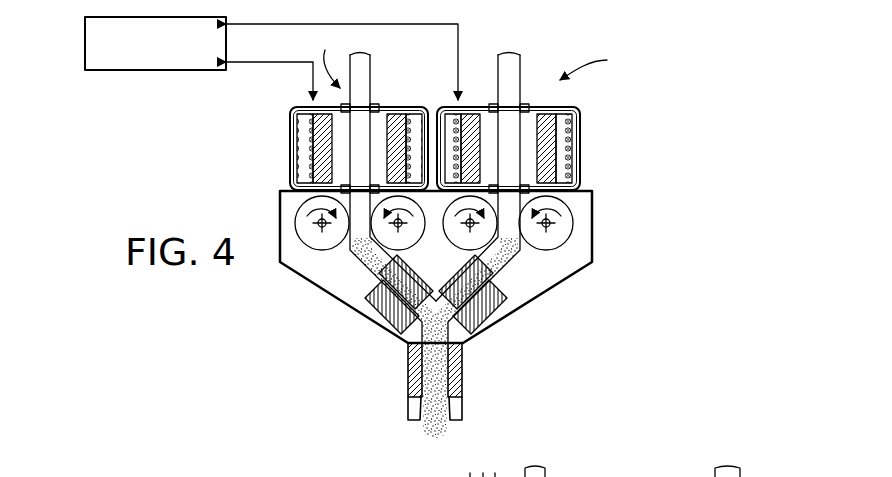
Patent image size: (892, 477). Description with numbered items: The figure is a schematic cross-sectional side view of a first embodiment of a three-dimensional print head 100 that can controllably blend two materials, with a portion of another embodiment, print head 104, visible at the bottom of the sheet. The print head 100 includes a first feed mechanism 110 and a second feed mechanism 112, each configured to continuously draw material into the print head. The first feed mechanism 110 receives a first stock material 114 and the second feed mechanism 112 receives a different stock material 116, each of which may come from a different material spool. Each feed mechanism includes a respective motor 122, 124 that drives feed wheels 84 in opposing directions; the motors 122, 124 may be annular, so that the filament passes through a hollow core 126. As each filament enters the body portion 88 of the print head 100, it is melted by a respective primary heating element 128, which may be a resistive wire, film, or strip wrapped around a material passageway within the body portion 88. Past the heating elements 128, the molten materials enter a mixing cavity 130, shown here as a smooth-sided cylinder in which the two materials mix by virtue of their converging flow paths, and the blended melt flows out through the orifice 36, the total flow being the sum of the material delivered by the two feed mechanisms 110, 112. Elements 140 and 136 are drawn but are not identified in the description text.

The print head 100 is at (668, 30).
The first feed mechanism 110 is at (327, 59).
The second feed mechanism 112 is at (602, 64).
The stock material 114 is at (371, 80).
The stock material 116 is at (522, 80).
The motor 122 is at (290, 148).
The motor 124 is at (596, 146).
The hollow core 126 is at (380, 133).
The primary heating element 128 is at (380, 312).
The mixing cavity 130 is at (85, 58).
The feed wheels 84 is at (296, 222).
The body portion 88 is at (592, 208).
The orifice 36 is at (423, 408).
The nozzle 140 is at (435, 375).
The print head 104 is at (755, 440).
The fixture 136 is at (605, 464).